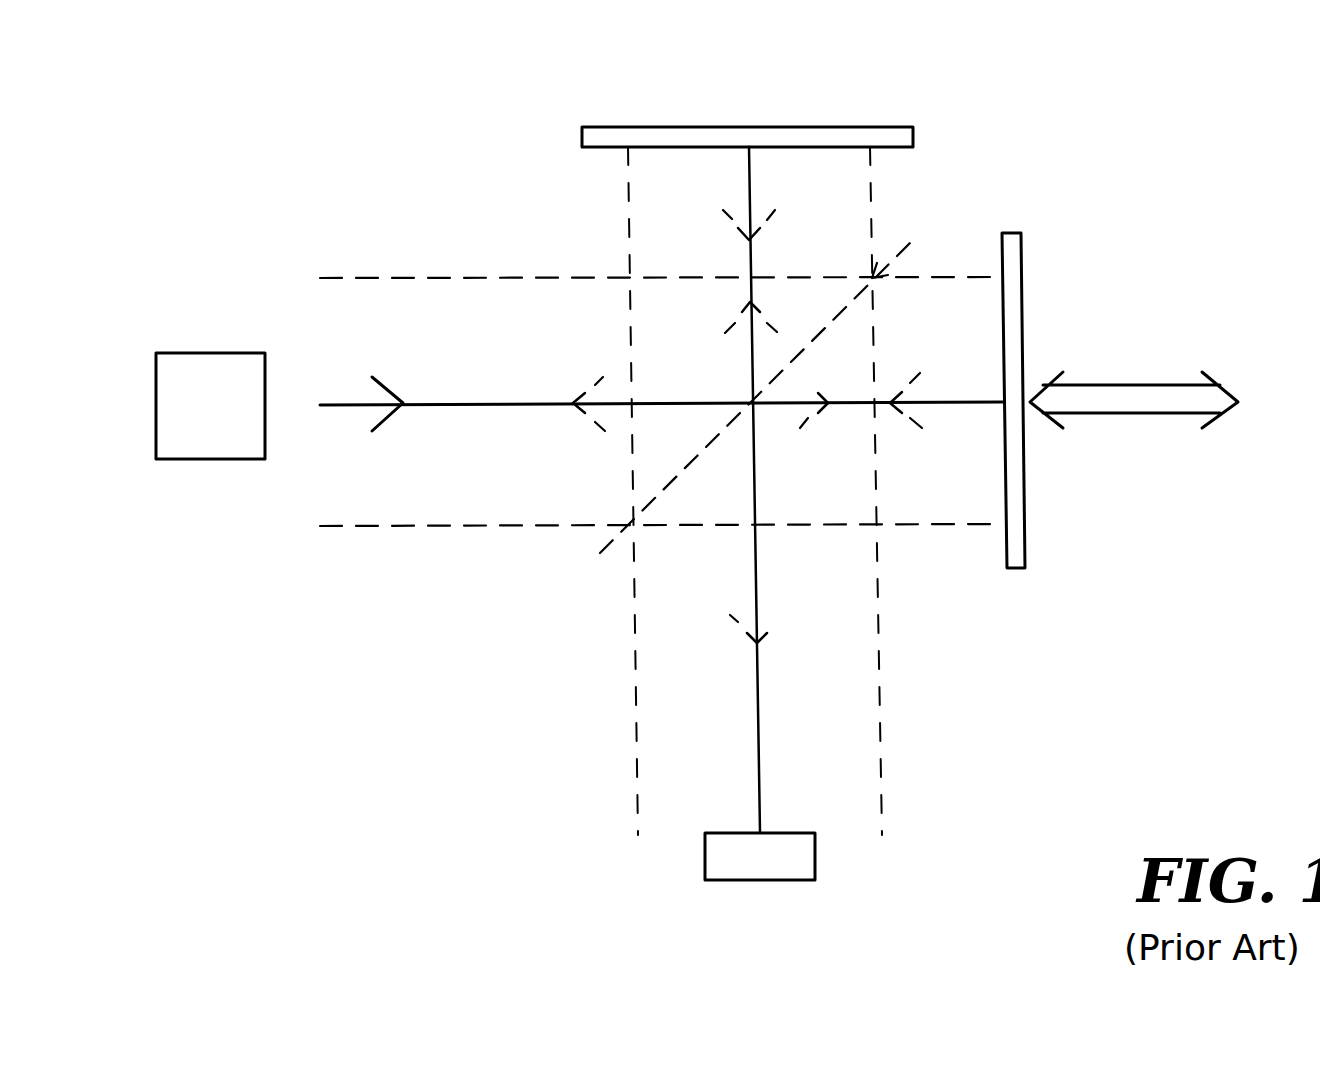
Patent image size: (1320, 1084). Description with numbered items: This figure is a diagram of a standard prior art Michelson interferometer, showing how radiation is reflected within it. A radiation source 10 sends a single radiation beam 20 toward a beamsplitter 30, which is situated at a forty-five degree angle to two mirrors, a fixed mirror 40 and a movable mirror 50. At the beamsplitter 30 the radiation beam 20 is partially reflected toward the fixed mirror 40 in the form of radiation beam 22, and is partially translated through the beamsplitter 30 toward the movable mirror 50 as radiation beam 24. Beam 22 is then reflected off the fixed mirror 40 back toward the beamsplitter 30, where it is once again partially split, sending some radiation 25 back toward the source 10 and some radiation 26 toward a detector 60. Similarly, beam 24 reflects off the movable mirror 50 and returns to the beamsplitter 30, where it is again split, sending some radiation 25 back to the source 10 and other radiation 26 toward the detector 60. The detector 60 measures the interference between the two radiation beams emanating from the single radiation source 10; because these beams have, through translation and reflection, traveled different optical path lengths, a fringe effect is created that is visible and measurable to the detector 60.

The radiation source 10 is at (184, 353).
The radiation beam 20 is at (386, 396).
The radiation beam 22 is at (752, 200).
The radiation beam 24 is at (800, 382).
The radiation 25 is at (587, 391).
The radiation 26 is at (781, 613).
The beamsplitter 30 is at (590, 570).
The fixed mirror 40 is at (618, 136).
The movable mirror 50 is at (1024, 258).
The detector 60 is at (816, 858).